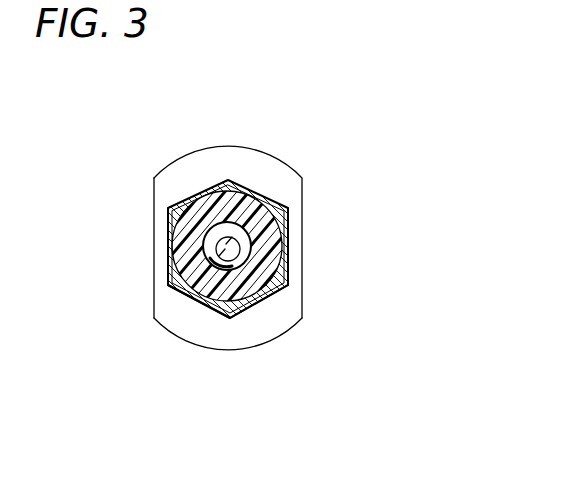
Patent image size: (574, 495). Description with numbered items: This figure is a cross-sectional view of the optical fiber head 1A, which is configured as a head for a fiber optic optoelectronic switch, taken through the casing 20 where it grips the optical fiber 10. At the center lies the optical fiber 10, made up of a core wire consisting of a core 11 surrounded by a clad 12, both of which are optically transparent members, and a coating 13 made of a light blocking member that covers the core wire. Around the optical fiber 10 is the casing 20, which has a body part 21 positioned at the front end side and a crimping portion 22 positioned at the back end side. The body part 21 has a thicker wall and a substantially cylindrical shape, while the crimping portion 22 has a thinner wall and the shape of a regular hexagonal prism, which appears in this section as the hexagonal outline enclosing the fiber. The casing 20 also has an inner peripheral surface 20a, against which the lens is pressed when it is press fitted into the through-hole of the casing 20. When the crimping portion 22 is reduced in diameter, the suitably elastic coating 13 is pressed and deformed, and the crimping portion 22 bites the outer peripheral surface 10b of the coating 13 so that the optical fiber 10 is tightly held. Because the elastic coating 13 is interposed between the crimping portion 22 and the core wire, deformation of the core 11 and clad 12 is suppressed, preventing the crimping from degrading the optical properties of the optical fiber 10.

The optical fiber head 1A is at (293, 121).
The optical fiber 10 is at (226, 268).
The outer peripheral surface 10b is at (232, 302).
The core 11 is at (245, 237).
The clad 12 is at (245, 260).
The coating 13 is at (268, 286).
The casing 20 is at (173, 157).
The inner peripheral surface 20a is at (187, 236).
The body part 21 is at (182, 317).
The crimping portion 22 is at (190, 292).